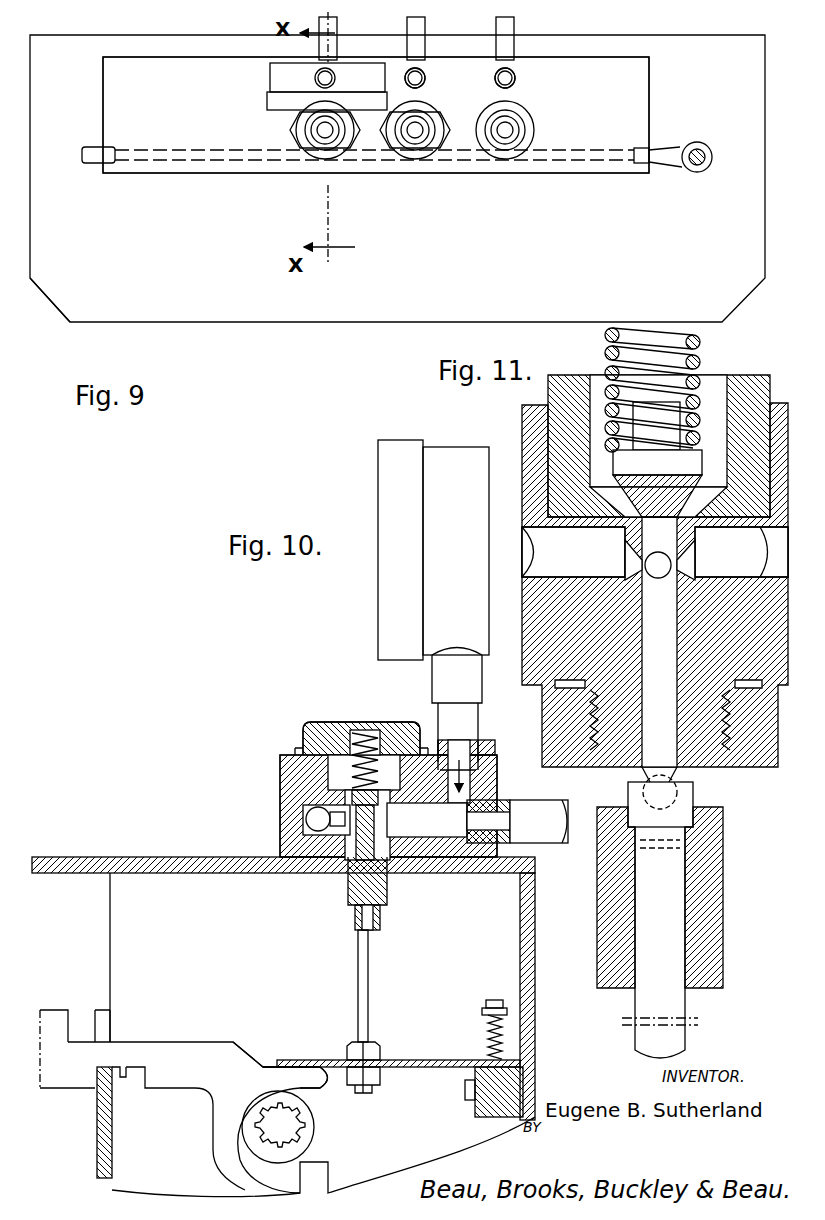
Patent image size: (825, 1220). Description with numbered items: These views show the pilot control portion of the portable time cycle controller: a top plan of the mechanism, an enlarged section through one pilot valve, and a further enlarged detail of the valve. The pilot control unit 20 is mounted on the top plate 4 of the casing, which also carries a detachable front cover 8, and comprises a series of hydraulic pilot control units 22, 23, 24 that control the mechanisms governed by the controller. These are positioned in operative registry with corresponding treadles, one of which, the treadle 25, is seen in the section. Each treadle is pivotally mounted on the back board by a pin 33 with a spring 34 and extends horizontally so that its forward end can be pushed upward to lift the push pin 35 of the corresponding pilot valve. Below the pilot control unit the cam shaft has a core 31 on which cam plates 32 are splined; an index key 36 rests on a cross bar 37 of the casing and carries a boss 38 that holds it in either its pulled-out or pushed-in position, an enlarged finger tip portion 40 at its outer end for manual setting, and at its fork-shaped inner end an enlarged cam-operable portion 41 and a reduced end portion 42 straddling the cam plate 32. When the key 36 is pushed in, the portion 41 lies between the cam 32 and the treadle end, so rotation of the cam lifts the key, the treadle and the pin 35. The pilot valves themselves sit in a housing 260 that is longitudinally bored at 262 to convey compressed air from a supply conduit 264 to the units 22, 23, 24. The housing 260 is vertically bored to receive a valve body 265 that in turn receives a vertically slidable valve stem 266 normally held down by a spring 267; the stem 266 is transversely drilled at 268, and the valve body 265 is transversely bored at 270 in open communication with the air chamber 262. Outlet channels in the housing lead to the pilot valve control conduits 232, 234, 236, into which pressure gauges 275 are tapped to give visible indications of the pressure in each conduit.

In FIG. 9, the top plate 4 is at (42, 212).
In FIG. 10, the top plate 4 is at (146, 857).
In FIG. 9, the front cover 8 is at (68, 303).
In FIG. 9, the pilot control unit 20 is at (272, 178).
In FIG. 10, the pilot control unit 20 is at (276, 797).
In FIG. 9, the pilot control unit 22 is at (338, 160).
In FIG. 10, the pilot control unit 22 is at (330, 738).
In FIG. 9, the pilot control unit 23 is at (428, 146).
In FIG. 9, the pilot control unit 24 is at (512, 146).
In FIG. 10, the treadle 25 is at (404, 1060).
In FIG. 10, the core 31 is at (286, 1127).
In FIG. 10, the cam plate 32 is at (246, 1100).
In FIG. 10, the pin 33 is at (493, 1000).
In FIG. 10, the spring 34 is at (488, 1035).
In FIG. 10, the push pin 35 is at (370, 985).
In FIG. 11, the push pin 35 is at (686, 1010).
In FIG. 10, the index key 36 is at (190, 1055).
In FIG. 10, the cross bar 37 is at (97, 1141).
In FIG. 10, the boss 38 is at (121, 1076).
In FIG. 10, the finger tip portion 40 is at (56, 1018).
In FIG. 10, the cam-operable portion 41 is at (266, 1062).
In FIG. 10, the reduced end portion 42 is at (310, 1075).
In FIG. 9, the pilot valve control conduit 232 is at (425, 28).
In FIG. 9, the pilot valve control conduit 234 is at (335, 35).
In FIG. 10, the pilot valve control conduit 234 is at (538, 812).
In FIG. 9, the pilot valve control conduit 236 is at (514, 28).
In FIG. 9, the housing 260 is at (612, 166).
In FIG. 10, the housing 260 is at (292, 815).
In FIG. 11, the housing 260 is at (525, 422).
In FIG. 9, the longitudinal bore 262 is at (220, 166).
In FIG. 10, the longitudinal bore 262 is at (303, 830).
In FIG. 9, the supply conduit 264 is at (690, 172).
In FIG. 10, the valve body 265 is at (300, 750).
In FIG. 11, the valve body 265 is at (548, 400).
In FIG. 10, the valve stem 266 is at (350, 880).
In FIG. 11, the valve stem 266 is at (705, 792).
In FIG. 11, the spring 267 is at (702, 357).
In FIG. 11, the transverse drilling 268 is at (680, 565).
In FIG. 9, the transverse bore 270 is at (494, 95).
In FIG. 10, the transverse bore 270 is at (447, 840).
In FIG. 11, the transverse bore 270 is at (612, 563).
In FIG. 9, the pressure gauge 275 is at (290, 80).
In FIG. 10, the pressure gauge 275 is at (392, 595).